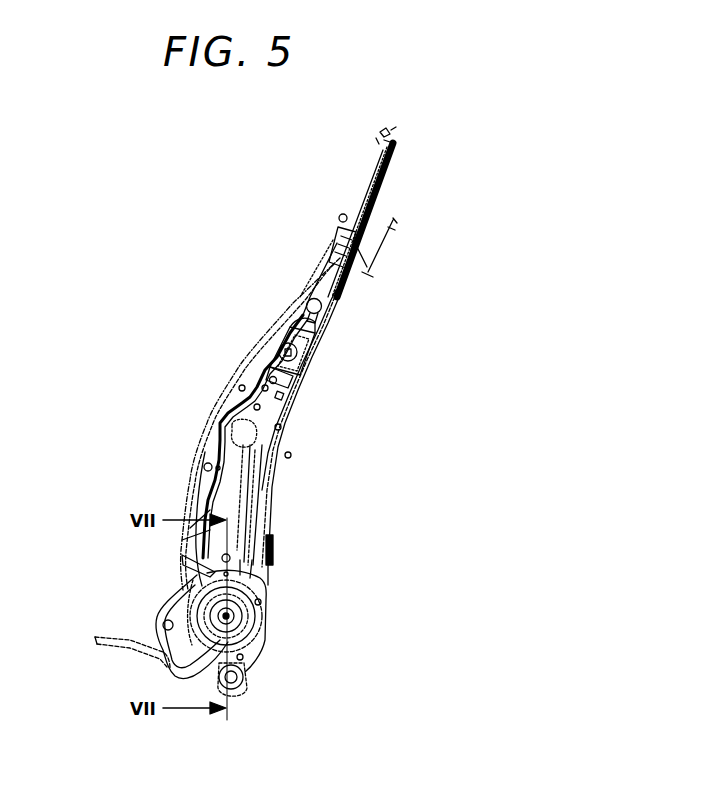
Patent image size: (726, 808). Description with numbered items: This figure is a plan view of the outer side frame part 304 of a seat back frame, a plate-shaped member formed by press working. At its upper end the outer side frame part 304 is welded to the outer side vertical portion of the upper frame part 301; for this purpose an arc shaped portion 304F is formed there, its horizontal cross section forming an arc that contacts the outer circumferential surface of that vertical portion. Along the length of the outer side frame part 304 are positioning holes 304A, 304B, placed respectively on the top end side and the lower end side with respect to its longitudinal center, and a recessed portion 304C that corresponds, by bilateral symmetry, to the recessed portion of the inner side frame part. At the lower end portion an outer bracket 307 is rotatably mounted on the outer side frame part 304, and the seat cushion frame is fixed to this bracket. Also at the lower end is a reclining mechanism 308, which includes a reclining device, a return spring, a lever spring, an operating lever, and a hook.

The upper frame part 301 is at (359, 180).
The outer side frame part 304 is at (202, 436).
The positioning hole 304A is at (270, 376).
The positioning hole 304B is at (207, 554).
The recessed portion 304C is at (237, 493).
The arc shaped portion 304F is at (336, 246).
The outer bracket 307 is at (247, 670).
The reclining mechanism 308 is at (237, 600).